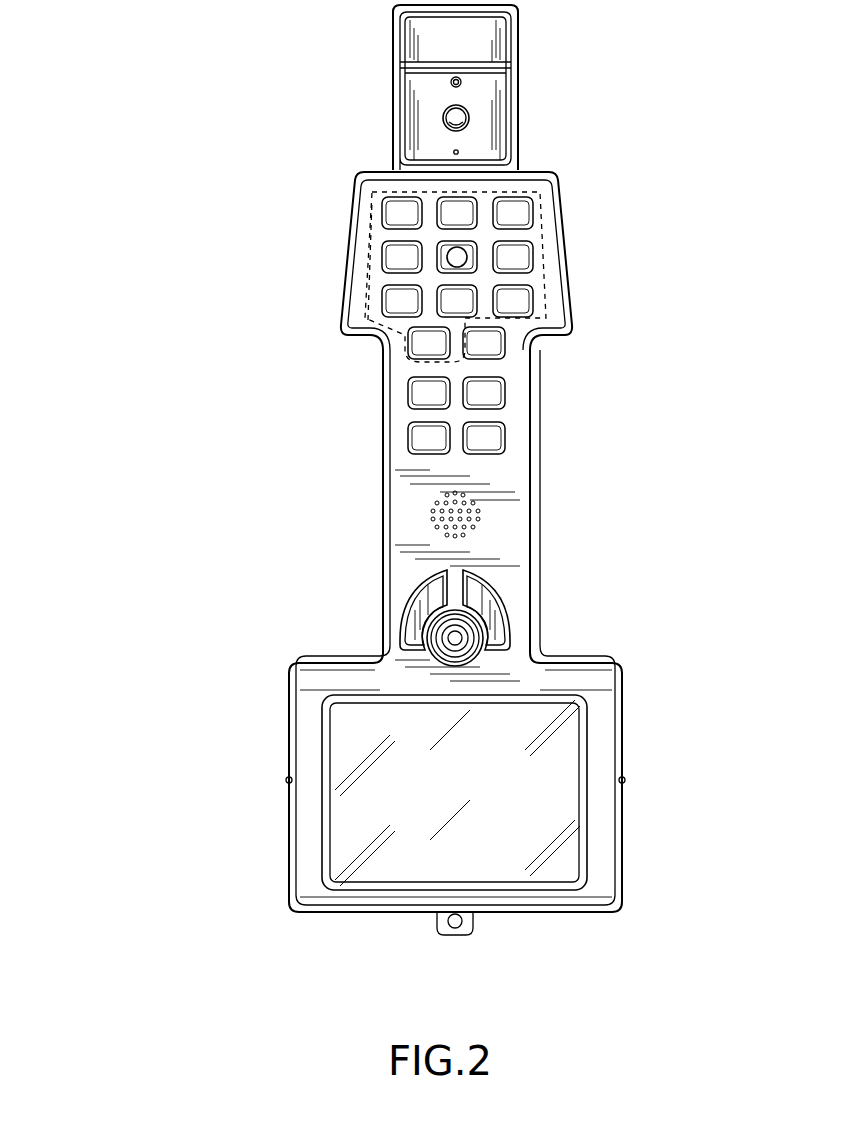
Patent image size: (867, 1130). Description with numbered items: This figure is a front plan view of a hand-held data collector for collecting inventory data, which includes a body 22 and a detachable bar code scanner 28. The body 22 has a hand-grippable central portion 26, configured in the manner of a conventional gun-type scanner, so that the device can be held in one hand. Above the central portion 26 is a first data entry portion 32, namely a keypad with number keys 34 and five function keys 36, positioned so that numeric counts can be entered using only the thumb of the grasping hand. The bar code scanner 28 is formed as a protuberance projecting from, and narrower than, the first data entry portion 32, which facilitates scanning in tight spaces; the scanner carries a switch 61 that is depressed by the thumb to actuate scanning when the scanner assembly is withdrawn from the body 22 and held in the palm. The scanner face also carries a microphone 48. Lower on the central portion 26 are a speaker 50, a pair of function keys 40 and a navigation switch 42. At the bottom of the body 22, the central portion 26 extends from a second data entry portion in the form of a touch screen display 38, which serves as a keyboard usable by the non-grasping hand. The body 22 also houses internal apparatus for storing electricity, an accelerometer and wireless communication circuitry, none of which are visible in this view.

The body 22 is at (205, 463).
The hand-grippable central portion 26 is at (343, 497).
The bar code scanner 28 is at (553, 93).
The first data entry portion 32 is at (333, 269).
The number keys 34 is at (545, 243).
The function keys 36 is at (507, 366).
The touch screen display 38 is at (598, 807).
The function keys 40 is at (478, 598).
The navigation switch 42 is at (470, 625).
The microphone 48 is at (481, 149).
The speaker 50 is at (495, 515).
The switch 61 is at (427, 117).